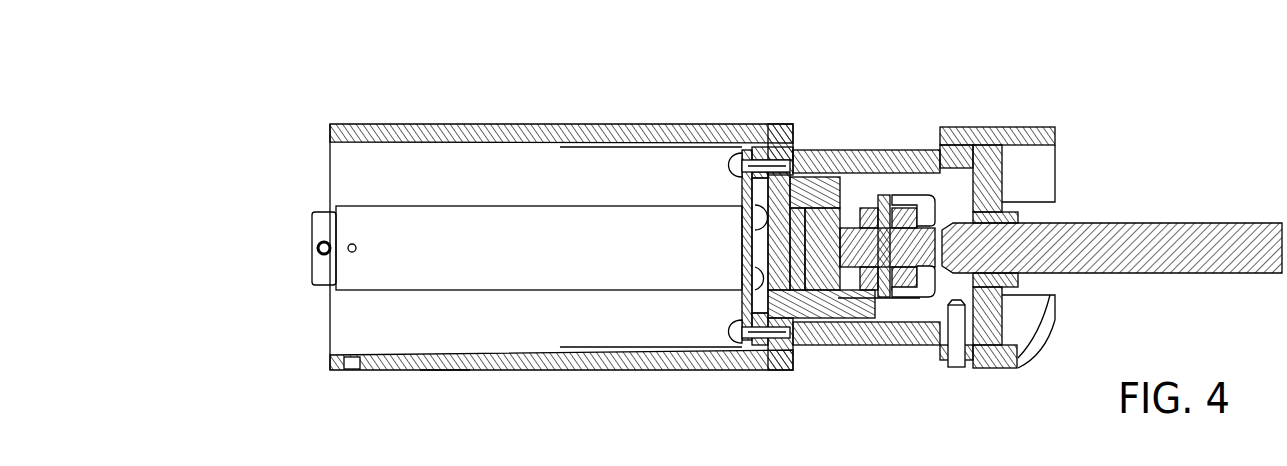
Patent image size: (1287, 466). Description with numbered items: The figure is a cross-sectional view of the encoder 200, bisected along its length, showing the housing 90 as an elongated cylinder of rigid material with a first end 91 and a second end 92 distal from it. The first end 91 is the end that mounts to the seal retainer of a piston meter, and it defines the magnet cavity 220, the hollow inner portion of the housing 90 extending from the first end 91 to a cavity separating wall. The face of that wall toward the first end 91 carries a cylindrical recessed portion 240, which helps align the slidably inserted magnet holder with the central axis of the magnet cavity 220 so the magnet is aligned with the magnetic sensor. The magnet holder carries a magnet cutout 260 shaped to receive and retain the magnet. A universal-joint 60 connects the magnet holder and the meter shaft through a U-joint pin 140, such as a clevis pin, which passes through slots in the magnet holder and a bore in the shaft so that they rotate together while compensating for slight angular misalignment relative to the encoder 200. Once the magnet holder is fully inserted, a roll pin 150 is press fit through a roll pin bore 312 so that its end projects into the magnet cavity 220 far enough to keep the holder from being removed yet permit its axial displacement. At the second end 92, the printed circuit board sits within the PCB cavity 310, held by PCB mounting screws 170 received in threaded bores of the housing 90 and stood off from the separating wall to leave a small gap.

The encoder 200 is at (332, 383).
The housing 90 is at (537, 370).
The second end 92 is at (441, 370).
The PCB cavity 310 is at (597, 318).
The PCB mounting screws 170 is at (732, 163).
The magnet cutout 260 is at (786, 205).
The recessed portion 240 is at (768, 124).
The magnet cavity 220 is at (1018, 337).
The U-joint pin 140 is at (881, 198).
The universal-joint 60 is at (903, 196).
The first end 91 is at (957, 147).
The roll pin bore 312 is at (977, 365).
The roll pin 150 is at (958, 365).